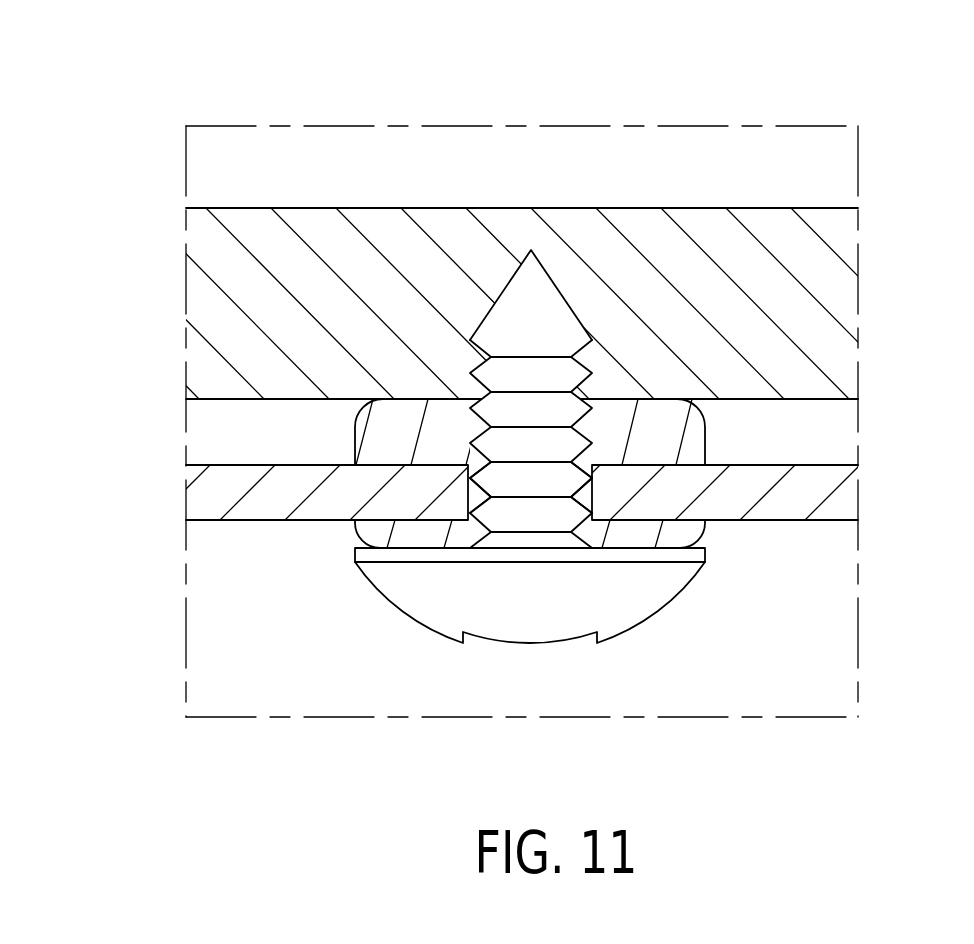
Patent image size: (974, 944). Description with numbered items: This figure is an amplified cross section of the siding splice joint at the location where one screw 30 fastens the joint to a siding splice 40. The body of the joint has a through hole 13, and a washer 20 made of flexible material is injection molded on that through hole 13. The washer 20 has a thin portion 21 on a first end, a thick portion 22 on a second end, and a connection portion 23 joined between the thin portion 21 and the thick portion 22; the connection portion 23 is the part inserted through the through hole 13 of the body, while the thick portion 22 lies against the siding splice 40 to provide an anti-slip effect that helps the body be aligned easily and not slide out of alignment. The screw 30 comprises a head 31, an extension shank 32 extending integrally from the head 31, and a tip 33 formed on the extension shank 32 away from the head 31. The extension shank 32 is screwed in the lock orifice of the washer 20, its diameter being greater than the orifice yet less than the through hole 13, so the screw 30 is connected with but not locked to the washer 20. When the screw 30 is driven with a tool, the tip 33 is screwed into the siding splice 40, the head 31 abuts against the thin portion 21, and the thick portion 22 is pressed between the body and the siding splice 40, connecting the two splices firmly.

The through hole 13 is at (468, 491).
The washer 20 is at (330, 546).
The thin portion 21 is at (707, 533).
The thick portion 22 is at (705, 443).
The connection portion 23 is at (592, 491).
The screw 30 is at (526, 660).
The head 31 is at (452, 587).
The extension shank 32 is at (493, 440).
The tip 33 is at (532, 268).
The siding splice 40 is at (706, 188).